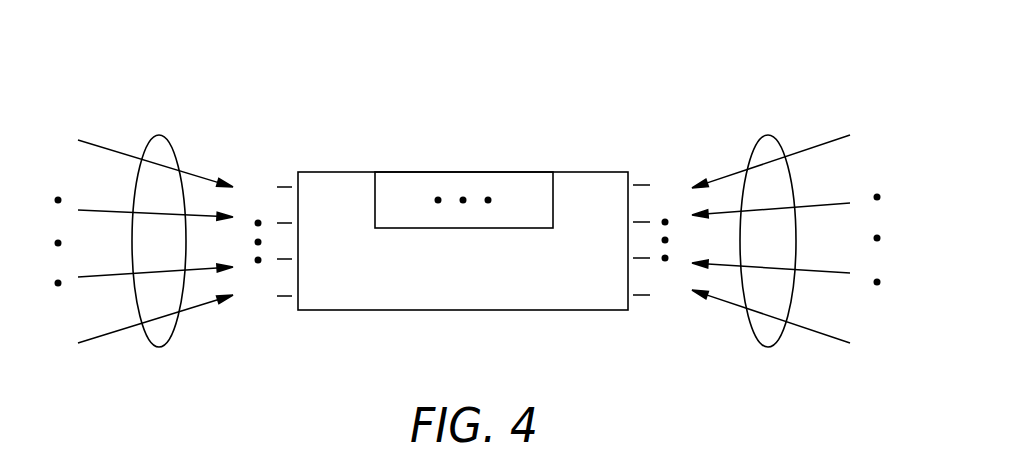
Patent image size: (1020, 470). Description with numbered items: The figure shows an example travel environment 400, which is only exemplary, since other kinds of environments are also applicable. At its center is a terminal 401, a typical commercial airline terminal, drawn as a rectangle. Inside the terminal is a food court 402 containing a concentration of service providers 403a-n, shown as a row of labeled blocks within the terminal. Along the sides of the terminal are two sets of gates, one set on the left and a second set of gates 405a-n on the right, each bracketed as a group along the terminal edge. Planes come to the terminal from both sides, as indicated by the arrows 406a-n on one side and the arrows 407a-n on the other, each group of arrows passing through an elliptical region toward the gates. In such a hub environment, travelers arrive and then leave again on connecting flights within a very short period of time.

The travel environment 400 is at (659, 56).
The terminal 401 is at (628, 172).
The food court 402 is at (465, 228).
The service providers SP1-SPn 403a-n is at (553, 162).
The gates H1-Hn 405a-n is at (303, 185).
The arrows 406a-n is at (157, 135).
The arrows 407a-n is at (768, 135).